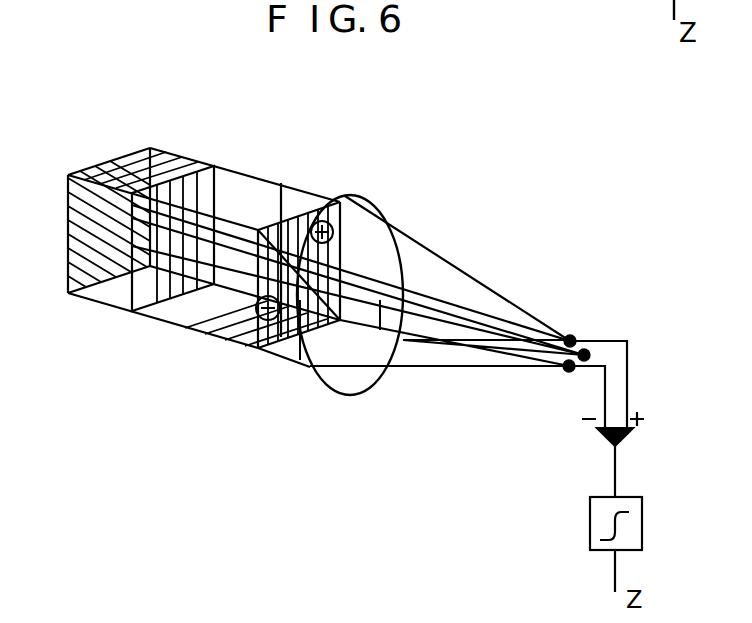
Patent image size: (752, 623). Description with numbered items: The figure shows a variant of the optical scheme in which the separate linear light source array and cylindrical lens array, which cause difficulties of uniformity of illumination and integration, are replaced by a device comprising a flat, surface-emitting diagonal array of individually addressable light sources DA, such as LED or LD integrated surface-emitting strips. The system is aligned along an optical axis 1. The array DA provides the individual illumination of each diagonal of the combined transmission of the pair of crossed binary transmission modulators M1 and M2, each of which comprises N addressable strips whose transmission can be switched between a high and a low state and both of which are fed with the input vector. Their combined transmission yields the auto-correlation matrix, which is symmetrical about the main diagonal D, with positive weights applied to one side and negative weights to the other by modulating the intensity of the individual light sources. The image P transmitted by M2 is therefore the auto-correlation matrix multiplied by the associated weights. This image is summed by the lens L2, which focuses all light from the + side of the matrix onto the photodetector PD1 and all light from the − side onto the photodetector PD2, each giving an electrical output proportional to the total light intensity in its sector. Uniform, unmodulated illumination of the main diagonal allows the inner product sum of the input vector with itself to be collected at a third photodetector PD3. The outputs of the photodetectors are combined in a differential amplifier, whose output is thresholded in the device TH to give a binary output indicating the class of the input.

The diagonal array of light sources DA is at (118, 150).
The binary transmission modulator M1 is at (222, 182).
The binary transmission modulator M2 is at (292, 200).
The image P is at (247, 338).
The lens L2 is at (345, 196).
The main diagonal D is at (330, 392).
The optical axis 1 is at (380, 300).
The photodetector PD1 is at (572, 335).
The photodetector PD2 is at (567, 370).
The third photodetector PD3 is at (593, 352).
The thresholding device TH is at (590, 523).